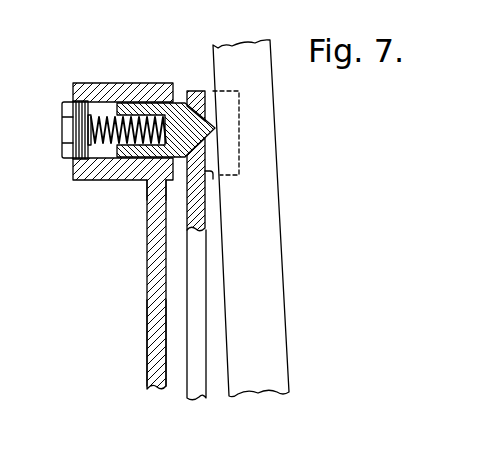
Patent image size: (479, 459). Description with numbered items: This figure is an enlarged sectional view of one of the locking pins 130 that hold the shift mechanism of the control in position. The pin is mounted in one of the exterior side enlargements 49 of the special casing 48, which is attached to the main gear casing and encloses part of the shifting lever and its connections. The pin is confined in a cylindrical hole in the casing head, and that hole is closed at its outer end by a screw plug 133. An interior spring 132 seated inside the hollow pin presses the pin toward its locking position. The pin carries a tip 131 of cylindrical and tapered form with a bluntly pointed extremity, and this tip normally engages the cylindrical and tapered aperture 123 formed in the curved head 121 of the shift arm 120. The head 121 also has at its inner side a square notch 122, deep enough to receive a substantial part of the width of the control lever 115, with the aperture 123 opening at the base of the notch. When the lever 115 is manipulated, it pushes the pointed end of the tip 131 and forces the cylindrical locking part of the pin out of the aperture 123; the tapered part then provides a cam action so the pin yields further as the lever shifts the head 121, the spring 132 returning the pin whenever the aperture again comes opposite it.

The locking pin 130 is at (133, 221).
The tip 131 is at (217, 127).
The interior spring 132 is at (112, 127).
The screw plug 133 is at (70, 130).
The cylindrical and tapered aperture 123 is at (210, 152).
The square notch 122 is at (208, 163).
The curved head 121 is at (207, 207).
The shift arm 120 is at (193, 377).
The control lever 115 is at (255, 290).
The casing 48 is at (148, 305).
The exterior side enlargement 49 is at (130, 168).